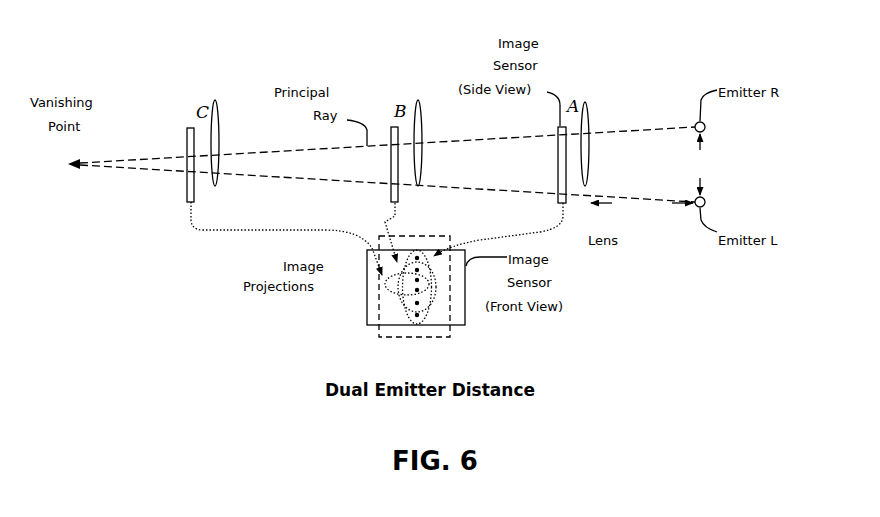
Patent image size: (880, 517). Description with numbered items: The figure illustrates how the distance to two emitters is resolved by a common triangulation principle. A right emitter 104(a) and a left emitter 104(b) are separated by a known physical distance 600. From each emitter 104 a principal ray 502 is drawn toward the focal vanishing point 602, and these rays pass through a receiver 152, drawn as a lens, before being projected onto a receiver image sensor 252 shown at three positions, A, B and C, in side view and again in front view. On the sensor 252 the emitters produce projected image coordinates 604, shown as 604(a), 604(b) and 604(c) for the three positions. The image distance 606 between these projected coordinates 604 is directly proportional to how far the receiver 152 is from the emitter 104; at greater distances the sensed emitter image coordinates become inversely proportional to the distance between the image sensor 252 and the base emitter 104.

The emitter 104 is at (707, 127).
The receiver 152 is at (220, 196).
The receiver image sensor 252 is at (191, 130).
The principal ray 502 is at (266, 150).
The distance between emitters 600 is at (717, 168).
The focal vanishing point 602 is at (67, 168).
The projected image coordinates 604 is at (379, 279).
The image distance 606 is at (647, 219).